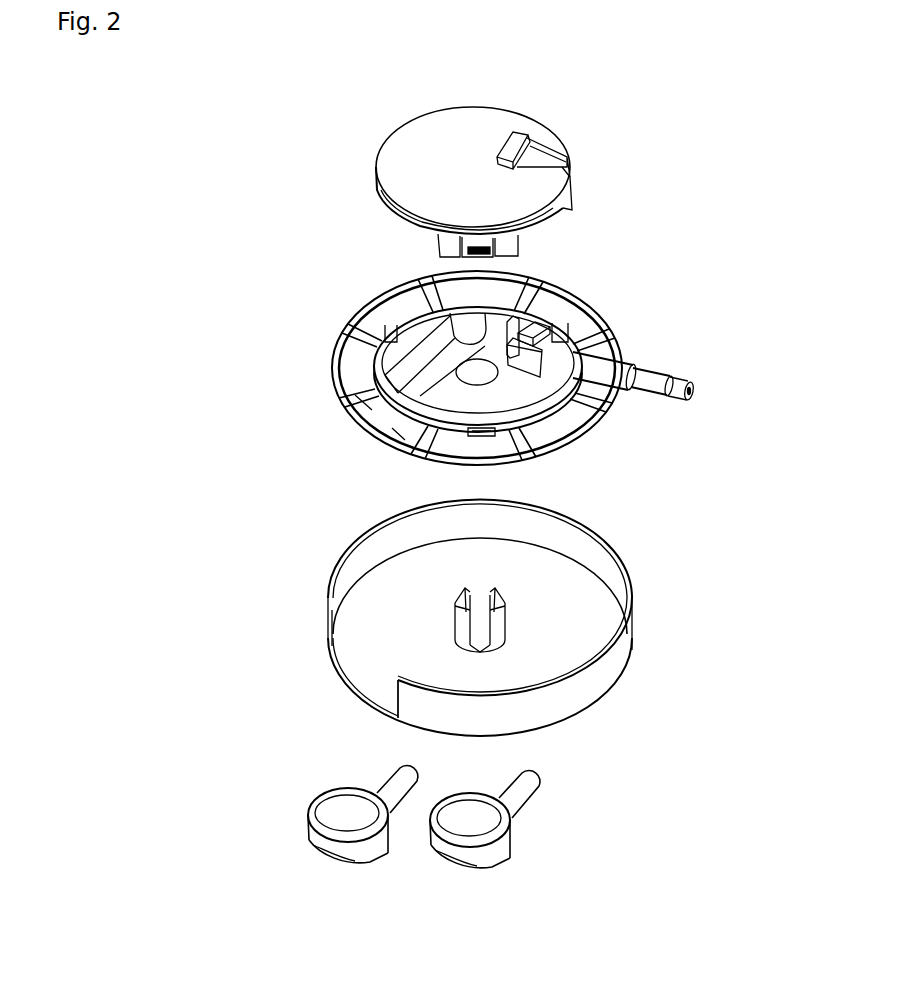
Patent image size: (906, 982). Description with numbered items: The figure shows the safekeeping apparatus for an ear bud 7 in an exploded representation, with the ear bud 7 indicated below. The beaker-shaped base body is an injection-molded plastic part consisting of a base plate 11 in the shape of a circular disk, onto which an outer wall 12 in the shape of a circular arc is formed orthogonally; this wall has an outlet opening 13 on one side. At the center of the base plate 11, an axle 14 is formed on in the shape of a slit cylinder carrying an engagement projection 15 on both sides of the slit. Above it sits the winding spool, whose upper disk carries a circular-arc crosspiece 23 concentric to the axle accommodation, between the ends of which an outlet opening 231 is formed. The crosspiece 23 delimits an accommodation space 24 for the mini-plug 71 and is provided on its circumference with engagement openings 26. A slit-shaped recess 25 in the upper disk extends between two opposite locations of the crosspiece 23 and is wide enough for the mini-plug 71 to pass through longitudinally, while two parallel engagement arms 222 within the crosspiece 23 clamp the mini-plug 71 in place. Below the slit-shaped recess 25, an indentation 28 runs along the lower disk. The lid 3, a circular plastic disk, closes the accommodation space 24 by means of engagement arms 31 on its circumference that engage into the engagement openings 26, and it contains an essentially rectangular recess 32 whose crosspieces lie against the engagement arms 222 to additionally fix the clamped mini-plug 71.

The lid 3 is at (487, 118).
The rectangular recess 32 is at (547, 160).
The engagement arms 31 is at (430, 253).
The slit-shaped recess 25 is at (410, 302).
The crosspiece 23 is at (378, 364).
The indentation 28 is at (358, 423).
The accommodation space 24 is at (590, 427).
The engagement openings 26 is at (473, 450).
The engagement arms 222 is at (537, 318).
The outlet opening 231 is at (595, 330).
The mini-plug 71 is at (650, 380).
The base plate 11 is at (497, 621).
The outer wall 12 is at (608, 672).
The outlet opening 13 is at (357, 662).
The axle 14 is at (508, 628).
The engagement projection 15 is at (455, 600).
The ear bud 7 is at (535, 795).